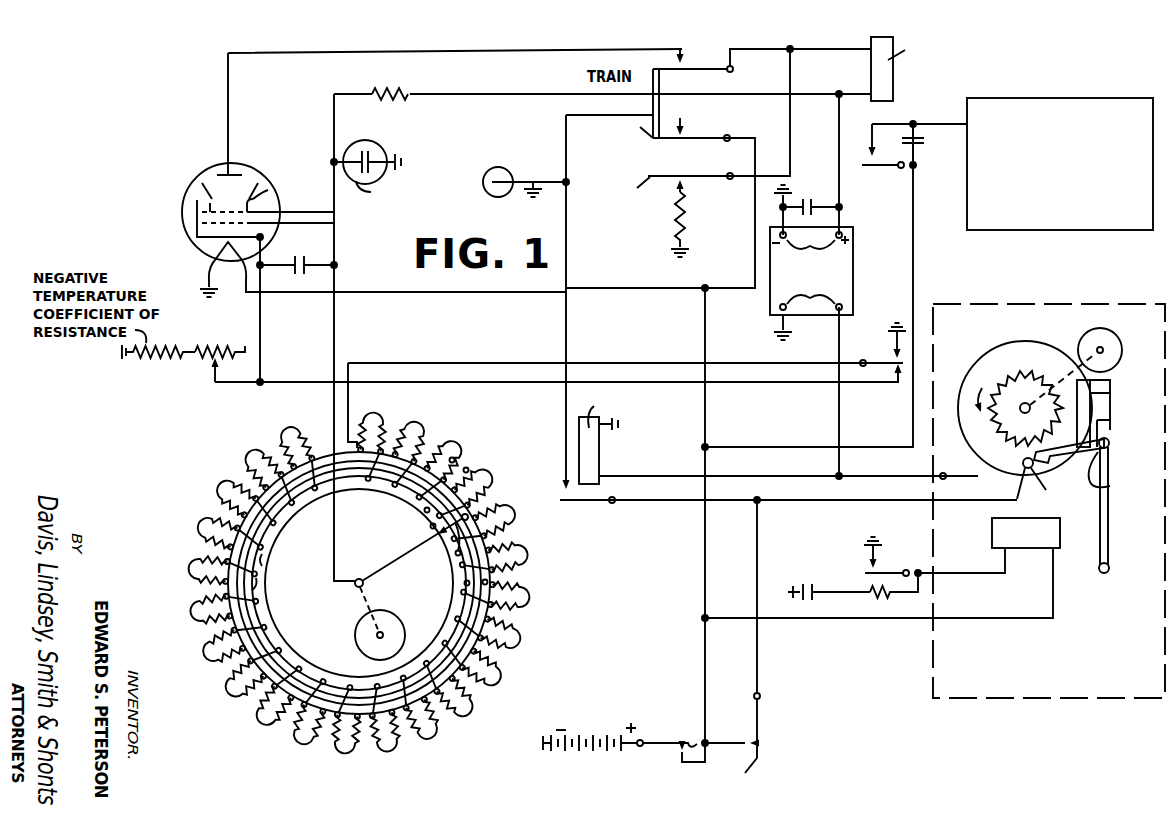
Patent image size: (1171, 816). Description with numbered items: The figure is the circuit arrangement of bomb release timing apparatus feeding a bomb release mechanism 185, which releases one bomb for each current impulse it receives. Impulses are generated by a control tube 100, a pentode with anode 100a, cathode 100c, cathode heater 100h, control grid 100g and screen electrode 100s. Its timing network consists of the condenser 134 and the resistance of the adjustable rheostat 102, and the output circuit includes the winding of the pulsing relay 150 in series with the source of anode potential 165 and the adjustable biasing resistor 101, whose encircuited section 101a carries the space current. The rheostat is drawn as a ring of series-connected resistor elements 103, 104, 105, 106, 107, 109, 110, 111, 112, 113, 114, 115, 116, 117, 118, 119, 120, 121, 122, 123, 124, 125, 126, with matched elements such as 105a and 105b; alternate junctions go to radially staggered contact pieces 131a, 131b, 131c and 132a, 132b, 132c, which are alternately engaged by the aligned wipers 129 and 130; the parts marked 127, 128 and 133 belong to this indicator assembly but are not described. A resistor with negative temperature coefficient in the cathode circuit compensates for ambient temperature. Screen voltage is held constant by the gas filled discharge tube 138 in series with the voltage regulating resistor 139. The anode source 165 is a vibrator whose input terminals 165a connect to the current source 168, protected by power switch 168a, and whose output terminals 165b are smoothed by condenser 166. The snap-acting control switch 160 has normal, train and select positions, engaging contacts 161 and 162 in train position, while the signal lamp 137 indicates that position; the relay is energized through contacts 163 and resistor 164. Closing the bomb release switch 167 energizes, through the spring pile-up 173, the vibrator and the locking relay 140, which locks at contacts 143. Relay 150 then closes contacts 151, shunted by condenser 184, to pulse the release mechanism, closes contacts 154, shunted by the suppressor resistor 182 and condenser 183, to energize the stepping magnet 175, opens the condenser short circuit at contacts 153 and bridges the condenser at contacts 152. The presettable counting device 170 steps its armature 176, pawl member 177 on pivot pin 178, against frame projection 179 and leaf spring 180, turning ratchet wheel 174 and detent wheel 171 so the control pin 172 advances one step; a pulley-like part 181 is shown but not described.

The control tube 100 is at (212, 170).
The anode 100a is at (243, 170).
The control grid 100g is at (210, 204).
The cathode 100c is at (197, 225).
The cathode heater 100h is at (222, 252).
The screen electrode 100s is at (290, 172).
The adjustable biasing resistor 101 is at (203, 360).
The encircuited section of biasing resistor 101a is at (210, 348).
The adjustable rheostat 102 is at (128, 360).
The resistor element 103 is at (374, 412).
The resistor element 104 is at (419, 424).
The resistor element 105 is at (461, 443).
The resistor element 105a is at (452, 457).
The matching resistor element 105b is at (468, 468).
The resistor element 106 is at (493, 472).
The resistor element 107 is at (516, 511).
The resistor element 109 is at (530, 554).
The resistor element 110 is at (531, 597).
The resistor element 111 is at (522, 641).
The resistor element 112 is at (502, 681).
The resistor element 113 is at (472, 714).
The resistor element 114 is at (434, 740).
The resistor element 115 is at (389, 752).
The resistor element 116 is at (344, 754).
The resistor element 117 is at (297, 745).
The resistor element 118 is at (258, 723).
The resistor element 119 is at (226, 693).
The resistor element 120 is at (202, 655).
The resistor element 121 is at (190, 612).
The resistor element 122 is at (188, 567).
The resistor element 123 is at (197, 523).
The resistor element 124 is at (218, 484).
The resistor element 125 is at (248, 450).
The resistor element 126 is at (287, 424).
The contact ring 127 is at (263, 566).
The contact ring 128 is at (254, 585).
The wiper 129 is at (429, 585).
The wiper 130 is at (428, 540).
The contact piece 131a is at (391, 523).
The contact piece 131b is at (470, 513).
The contact piece 131c is at (483, 584).
The contact piece 132a is at (424, 512).
The contact piece 132b is at (430, 517).
The contact piece 132c is at (455, 548).
The indicator dial 133 is at (371, 633).
The condenser 134 is at (332, 258).
The signal lamp 137 is at (486, 173).
The gas filled electric discharge tube 138 is at (378, 150).
The voltage regulating resistor 139 is at (408, 86).
The locking relay 140 is at (593, 456).
The contacts 143 is at (572, 500).
The pulsing relay 150 is at (888, 90).
The contacts 151 is at (866, 168).
The contacts 152 is at (889, 352).
The contacts 153 is at (893, 380).
The contacts 154 is at (879, 570).
The control switch 160 is at (678, 168).
The contacts 161 is at (692, 60).
The contacts 162 is at (688, 138).
The contacts 163 is at (686, 182).
The resistor 164 is at (668, 228).
The source of anode potential 165 is at (852, 300).
The input terminals 165a is at (811, 290).
The output terminals 165b is at (811, 255).
The condenser 166 is at (808, 203).
The bomb release switch 167 is at (745, 738).
The current source 168 is at (607, 736).
The power switch 168a is at (690, 738).
The presettable counting device 170 is at (1066, 308).
The detent wheel 171 is at (985, 368).
The control pin 172 is at (1036, 480).
The spring pile-up 173 is at (982, 482).
The ratchet wheel 174 is at (1030, 370).
The stepping magnet 175 is at (1020, 540).
The armature 176 is at (1108, 542).
The pawl member 177 is at (1111, 484).
The pivot pin 178 is at (1110, 448).
The frame projection 179 is at (1112, 384).
The leaf spring 180 is at (1111, 405).
The pulley 181 is at (1121, 350).
The resistor 182 is at (882, 604).
The condenser 183 is at (832, 582).
The condenser 184 is at (918, 147).
The bomb release mechanism 185 is at (1133, 226).